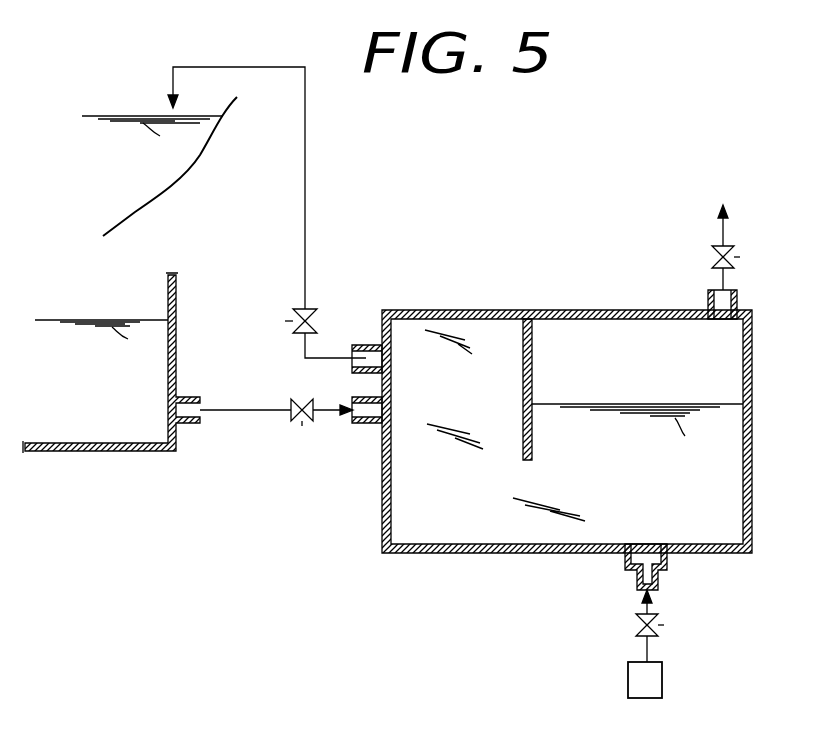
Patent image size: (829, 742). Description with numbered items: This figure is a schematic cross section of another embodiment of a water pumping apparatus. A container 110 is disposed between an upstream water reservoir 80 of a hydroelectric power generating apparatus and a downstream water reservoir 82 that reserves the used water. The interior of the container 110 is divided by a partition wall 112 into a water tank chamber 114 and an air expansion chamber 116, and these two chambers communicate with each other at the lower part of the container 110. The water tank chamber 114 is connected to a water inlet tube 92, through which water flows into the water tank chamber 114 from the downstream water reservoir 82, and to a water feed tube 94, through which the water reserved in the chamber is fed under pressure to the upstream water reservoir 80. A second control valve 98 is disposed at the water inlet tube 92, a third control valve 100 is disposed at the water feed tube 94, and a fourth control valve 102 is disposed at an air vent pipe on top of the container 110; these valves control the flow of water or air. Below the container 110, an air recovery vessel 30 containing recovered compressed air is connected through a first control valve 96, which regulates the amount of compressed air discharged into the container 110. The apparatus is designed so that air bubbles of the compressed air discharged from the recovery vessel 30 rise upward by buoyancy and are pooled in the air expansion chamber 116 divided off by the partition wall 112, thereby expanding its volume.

The upstream water reservoir 80 is at (125, 114).
The downstream water reservoir 82 is at (92, 318).
The water inlet tube 92 is at (243, 402).
The water feed tube 94 is at (305, 155).
The first control valve 96 is at (661, 625).
The second control valve 98 is at (302, 426).
The third control valve 100 is at (286, 321).
The fourth control valve 102 is at (738, 257).
The container 110 is at (630, 310).
The partition wall 112 is at (533, 357).
The water tank chamber 114 is at (465, 503).
The air expansion chamber 116 is at (652, 378).
The air recovery vessel 30 is at (662, 680).